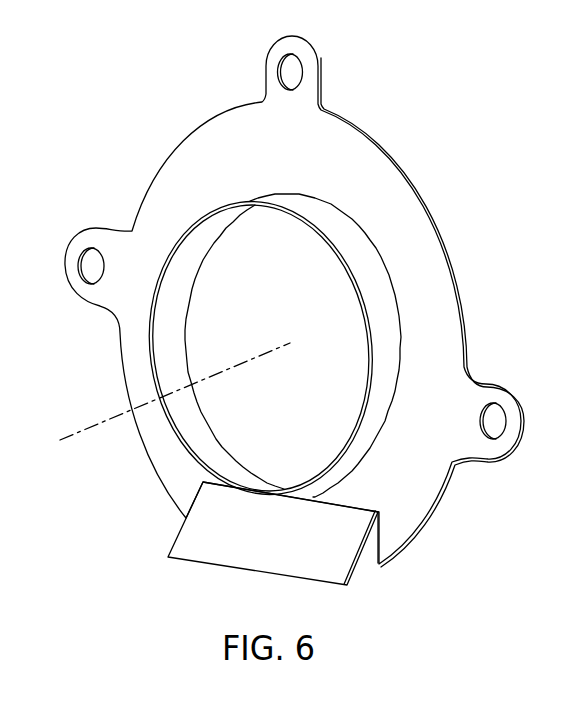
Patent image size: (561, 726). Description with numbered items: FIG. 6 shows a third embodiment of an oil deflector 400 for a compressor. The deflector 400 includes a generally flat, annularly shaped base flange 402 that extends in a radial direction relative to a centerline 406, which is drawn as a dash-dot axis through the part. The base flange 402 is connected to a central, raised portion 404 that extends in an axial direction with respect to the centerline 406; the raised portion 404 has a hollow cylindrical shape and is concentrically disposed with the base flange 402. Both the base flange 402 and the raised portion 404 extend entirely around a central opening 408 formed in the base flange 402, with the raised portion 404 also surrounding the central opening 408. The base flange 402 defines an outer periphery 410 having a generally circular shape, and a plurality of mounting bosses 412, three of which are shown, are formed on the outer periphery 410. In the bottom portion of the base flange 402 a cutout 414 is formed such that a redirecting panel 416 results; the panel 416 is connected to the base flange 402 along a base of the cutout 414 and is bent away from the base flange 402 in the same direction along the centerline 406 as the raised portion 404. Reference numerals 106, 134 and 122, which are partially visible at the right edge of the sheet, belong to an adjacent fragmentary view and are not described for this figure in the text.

The deflector 400 is at (160, 139).
The base flange 402 is at (407, 218).
The raised portion 404 is at (388, 330).
The centerline 406 is at (115, 421).
The central opening 408 is at (219, 337).
The outer periphery 410 is at (476, 349).
The mounting bosses 412 is at (311, 77).
The cutout 414 is at (368, 563).
The redirecting panel 416 is at (247, 533).
The component of adjacent figure 106 is at (560, 542).
The component of adjacent figure 134 is at (560, 623).
The component of adjacent figure 122 is at (560, 672).